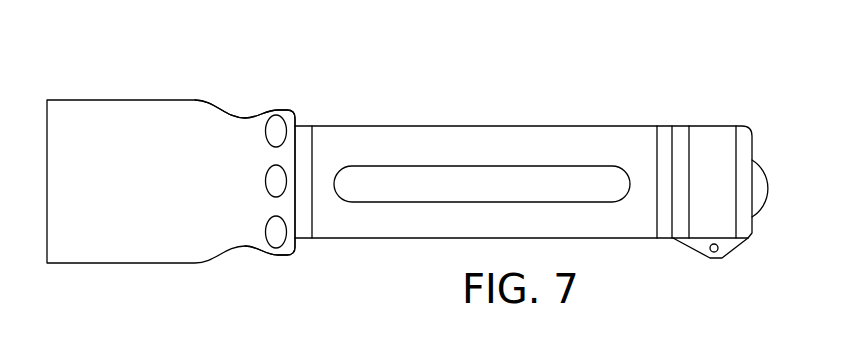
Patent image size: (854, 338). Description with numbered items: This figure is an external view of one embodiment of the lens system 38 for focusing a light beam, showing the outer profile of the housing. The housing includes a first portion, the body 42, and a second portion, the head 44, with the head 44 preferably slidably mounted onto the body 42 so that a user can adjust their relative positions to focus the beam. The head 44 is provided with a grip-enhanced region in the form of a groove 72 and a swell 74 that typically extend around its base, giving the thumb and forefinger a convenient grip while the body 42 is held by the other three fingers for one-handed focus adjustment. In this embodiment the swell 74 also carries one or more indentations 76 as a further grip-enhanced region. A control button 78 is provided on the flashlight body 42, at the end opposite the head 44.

The lens system 38 is at (137, 74).
The body 42 is at (460, 136).
The head 44 is at (122, 243).
The groove 72 is at (240, 118).
The swell 74 is at (278, 108).
The indentations 76 is at (277, 235).
The control button 78 is at (763, 168).